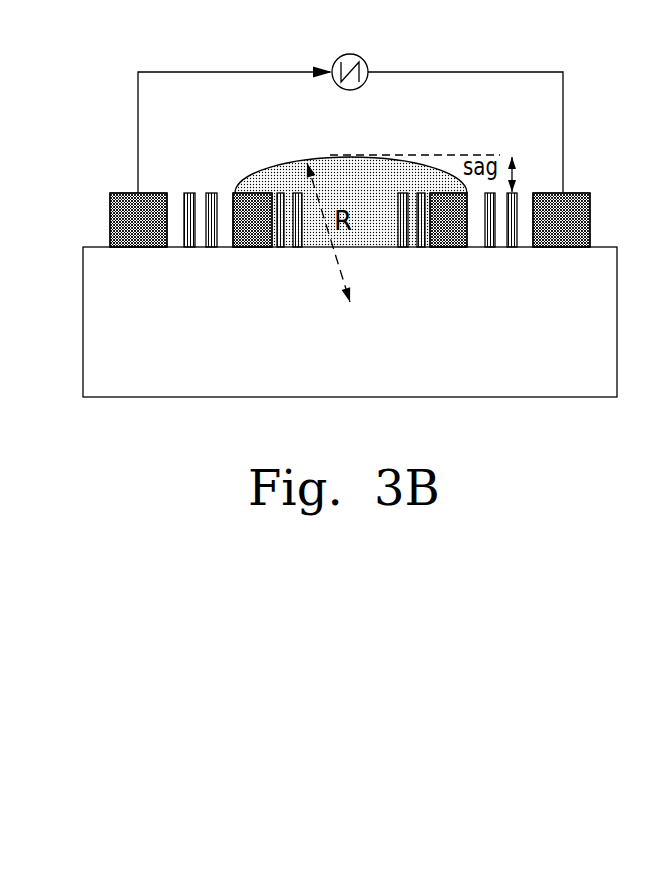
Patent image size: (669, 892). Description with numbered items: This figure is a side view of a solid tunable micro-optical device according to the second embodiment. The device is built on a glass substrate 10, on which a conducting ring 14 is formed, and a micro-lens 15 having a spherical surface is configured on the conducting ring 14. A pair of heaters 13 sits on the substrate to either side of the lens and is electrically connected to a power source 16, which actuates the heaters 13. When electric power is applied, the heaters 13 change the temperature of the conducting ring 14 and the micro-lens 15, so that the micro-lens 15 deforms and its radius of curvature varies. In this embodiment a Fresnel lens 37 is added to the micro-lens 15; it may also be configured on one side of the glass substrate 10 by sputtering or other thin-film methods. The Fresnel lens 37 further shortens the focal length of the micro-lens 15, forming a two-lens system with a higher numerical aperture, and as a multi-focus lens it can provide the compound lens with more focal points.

The glass substrate 10 is at (605, 312).
The heaters 13 is at (190, 195).
The conducting ring 14 is at (255, 200).
The micro-lens 15 is at (352, 167).
The power source 16 is at (363, 57).
The Fresnel lens 37 is at (403, 197).